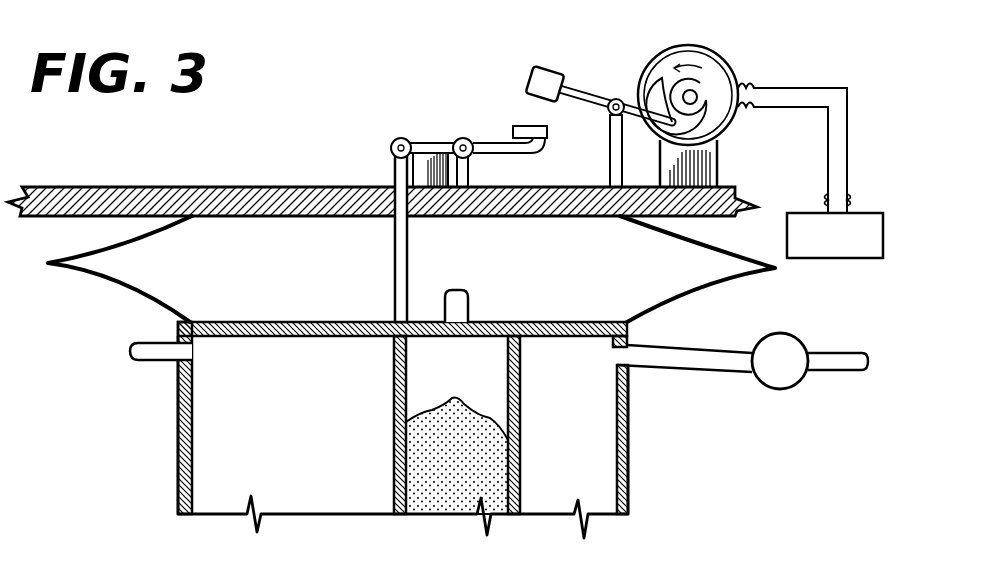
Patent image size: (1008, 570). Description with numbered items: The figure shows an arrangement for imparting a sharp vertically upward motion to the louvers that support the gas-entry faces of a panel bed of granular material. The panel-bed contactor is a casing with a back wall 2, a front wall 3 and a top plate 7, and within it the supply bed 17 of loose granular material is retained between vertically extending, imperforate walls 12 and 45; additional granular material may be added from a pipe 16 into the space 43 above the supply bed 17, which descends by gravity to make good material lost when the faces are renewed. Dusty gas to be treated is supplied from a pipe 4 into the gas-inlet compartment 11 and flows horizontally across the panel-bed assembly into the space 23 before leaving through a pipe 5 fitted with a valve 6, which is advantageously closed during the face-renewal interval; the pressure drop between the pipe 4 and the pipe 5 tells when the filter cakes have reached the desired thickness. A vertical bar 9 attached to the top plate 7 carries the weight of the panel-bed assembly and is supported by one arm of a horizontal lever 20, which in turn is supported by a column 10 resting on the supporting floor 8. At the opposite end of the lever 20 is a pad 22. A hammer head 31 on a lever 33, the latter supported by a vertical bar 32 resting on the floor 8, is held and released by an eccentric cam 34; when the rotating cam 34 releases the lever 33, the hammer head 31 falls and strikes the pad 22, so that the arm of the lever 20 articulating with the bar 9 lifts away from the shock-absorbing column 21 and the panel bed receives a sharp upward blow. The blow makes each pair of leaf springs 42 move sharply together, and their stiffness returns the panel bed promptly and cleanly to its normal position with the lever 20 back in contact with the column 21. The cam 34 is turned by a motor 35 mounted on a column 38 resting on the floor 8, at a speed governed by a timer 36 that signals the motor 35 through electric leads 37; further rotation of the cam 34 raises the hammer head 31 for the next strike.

The back wall 2 is at (615, 410).
The front wall 3 is at (178, 443).
The pipe 4 is at (162, 366).
The pipe 5 is at (650, 345).
The valve 6 is at (795, 383).
The top plate 7 is at (560, 322).
The supporting floor 8 is at (256, 186).
The vertical bar 9 is at (396, 173).
The column 10 is at (470, 171).
The gas-inlet compartment 11 is at (265, 442).
The imperforate wall 12 is at (392, 440).
The pipe 16 is at (472, 308).
The supply bed 17 is at (465, 510).
The horizontal lever 20 is at (434, 143).
The column 21 is at (410, 140).
The pad 22 is at (524, 126).
The space 23 is at (578, 455).
The hammer head 31 is at (545, 72).
The vertical bar 32 is at (611, 136).
The lever 33 is at (587, 98).
The eccentric cam 34 is at (660, 72).
The motor 35 is at (720, 64).
The timer 36 is at (869, 213).
The electric leads 37 is at (848, 150).
The column 38 is at (687, 155).
The leaf springs 42 is at (140, 250).
The space 43 is at (445, 378).
The imperforate wall 45 is at (457, 456).